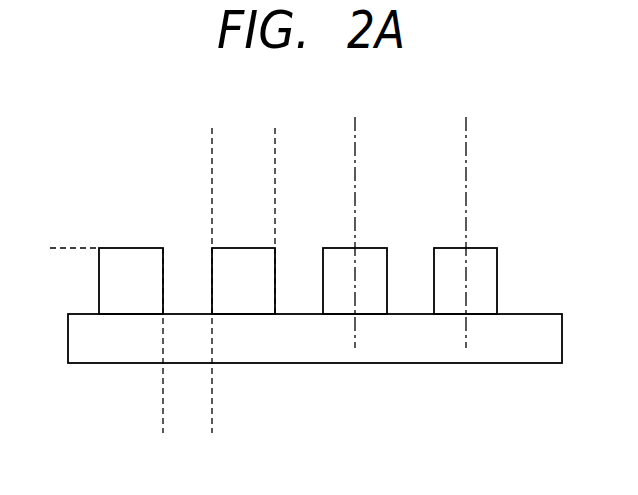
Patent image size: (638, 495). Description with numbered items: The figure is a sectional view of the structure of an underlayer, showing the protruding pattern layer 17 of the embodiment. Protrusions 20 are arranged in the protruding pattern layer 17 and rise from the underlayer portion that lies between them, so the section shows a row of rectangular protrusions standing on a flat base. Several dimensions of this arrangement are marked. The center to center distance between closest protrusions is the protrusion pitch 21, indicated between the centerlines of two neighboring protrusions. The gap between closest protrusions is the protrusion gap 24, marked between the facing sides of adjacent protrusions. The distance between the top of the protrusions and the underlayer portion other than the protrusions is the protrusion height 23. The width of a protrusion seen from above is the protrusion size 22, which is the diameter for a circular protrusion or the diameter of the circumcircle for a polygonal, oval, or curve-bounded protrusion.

The protruding pattern layer 17 is at (343, 285).
The protrusions 20 is at (487, 268).
The protrusion pitch 21 is at (466, 181).
The protrusion size 22 is at (275, 216).
The protrusion height 23 is at (69, 248).
The protrusion gap 24 is at (212, 419).